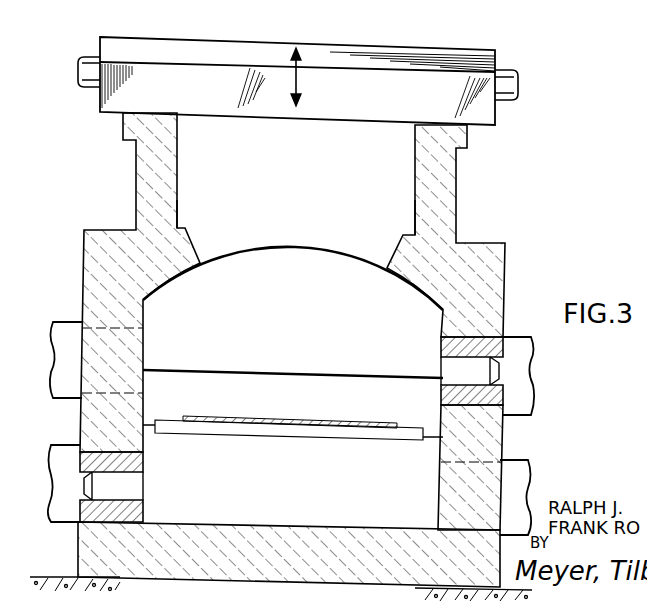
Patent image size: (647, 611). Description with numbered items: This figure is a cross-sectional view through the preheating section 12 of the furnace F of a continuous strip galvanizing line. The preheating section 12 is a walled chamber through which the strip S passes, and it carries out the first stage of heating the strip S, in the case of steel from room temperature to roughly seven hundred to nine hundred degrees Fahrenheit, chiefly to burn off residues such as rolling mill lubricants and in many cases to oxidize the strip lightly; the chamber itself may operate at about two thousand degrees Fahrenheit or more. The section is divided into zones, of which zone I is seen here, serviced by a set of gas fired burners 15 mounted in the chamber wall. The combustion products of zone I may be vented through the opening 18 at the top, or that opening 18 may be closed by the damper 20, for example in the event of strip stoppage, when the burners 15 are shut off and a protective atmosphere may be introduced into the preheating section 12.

The damper 20 is at (325, 45).
The opening 18 is at (339, 181).
The preheating section 12 is at (458, 193).
The gas fired burners 15 is at (527, 323).
The zone I is at (508, 443).
The strip S is at (238, 420).
The furnace F is at (68, 197).